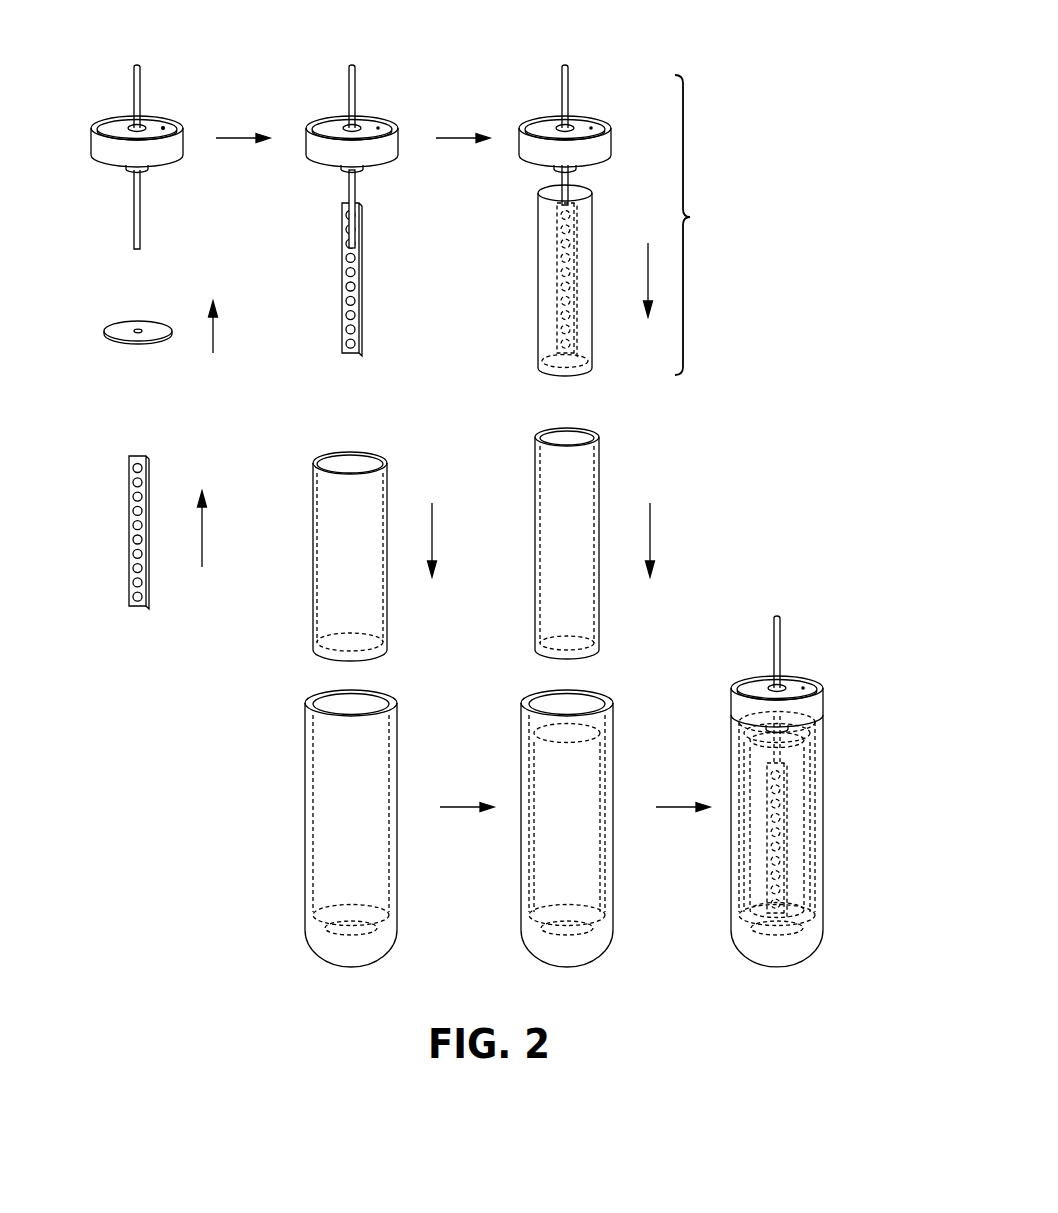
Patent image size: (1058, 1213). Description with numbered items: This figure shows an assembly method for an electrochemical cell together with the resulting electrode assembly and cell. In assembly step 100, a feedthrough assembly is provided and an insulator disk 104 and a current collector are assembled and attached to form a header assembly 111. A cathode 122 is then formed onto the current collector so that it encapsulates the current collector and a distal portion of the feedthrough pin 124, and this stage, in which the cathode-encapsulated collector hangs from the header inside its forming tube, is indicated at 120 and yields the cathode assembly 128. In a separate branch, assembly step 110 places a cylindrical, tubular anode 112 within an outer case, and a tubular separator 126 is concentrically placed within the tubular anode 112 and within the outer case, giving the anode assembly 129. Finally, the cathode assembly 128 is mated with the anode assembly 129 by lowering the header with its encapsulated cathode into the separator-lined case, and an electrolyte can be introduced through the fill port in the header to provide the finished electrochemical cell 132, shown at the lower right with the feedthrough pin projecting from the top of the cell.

The assembly step 100 is at (151, 27).
The disk seal 104 is at (104, 333).
The assembly step 110 is at (366, 27).
The header assembly 111 is at (405, 238).
The tubular anode 112 is at (315, 555).
The cap with strip in tube assembly 120 is at (581, 27).
The cathode 122 is at (538, 268).
The feedthrough pin 124 is at (562, 222).
The tubular separator 126 is at (536, 517).
The cathode assembly 128 is at (701, 225).
The anode assembly 129 is at (585, 826).
The electrochemical cell 132 is at (817, 791).